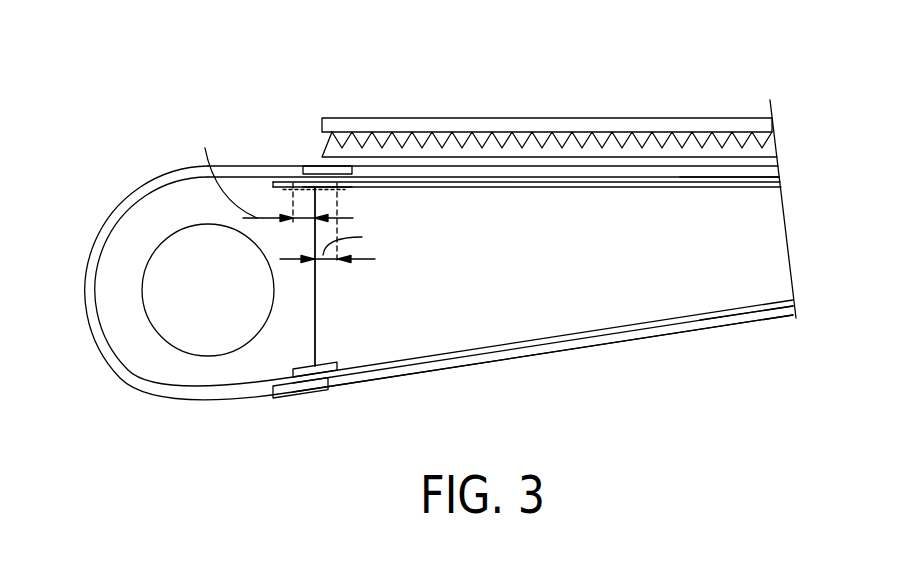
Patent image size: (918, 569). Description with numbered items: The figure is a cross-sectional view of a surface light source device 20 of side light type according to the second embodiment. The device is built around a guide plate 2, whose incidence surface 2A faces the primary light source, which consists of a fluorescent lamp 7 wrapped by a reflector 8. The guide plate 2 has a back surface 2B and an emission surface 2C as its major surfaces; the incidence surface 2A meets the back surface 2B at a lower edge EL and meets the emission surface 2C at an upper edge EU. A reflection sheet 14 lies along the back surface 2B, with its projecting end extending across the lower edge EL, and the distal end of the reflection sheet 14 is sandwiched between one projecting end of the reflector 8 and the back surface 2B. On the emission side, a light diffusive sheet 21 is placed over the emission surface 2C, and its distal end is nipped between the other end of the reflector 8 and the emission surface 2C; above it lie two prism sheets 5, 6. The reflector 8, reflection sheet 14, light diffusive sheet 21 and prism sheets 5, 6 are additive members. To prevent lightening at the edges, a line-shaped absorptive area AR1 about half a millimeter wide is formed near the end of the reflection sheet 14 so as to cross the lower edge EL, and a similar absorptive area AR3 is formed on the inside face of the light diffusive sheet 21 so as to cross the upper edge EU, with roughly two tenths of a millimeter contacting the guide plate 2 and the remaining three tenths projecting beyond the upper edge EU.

The surface light source device 20 is at (440, 233).
The guide plate 2 is at (619, 328).
The incidence surface 2A is at (318, 306).
The back surface 2B is at (710, 321).
The emission surface 2C is at (690, 188).
The prism sheet 5 is at (516, 134).
The prism sheet 6 is at (455, 122).
The fluorescent lamp 7 is at (204, 338).
The reflector 8 is at (167, 400).
The reflection sheet 14 is at (538, 358).
The light diffusive sheet 21 is at (680, 173).
The absorptive area AR1 is at (302, 396).
The absorptive area AR3 is at (305, 177).
The lower edge EL is at (313, 368).
The upper edge EU is at (315, 190).